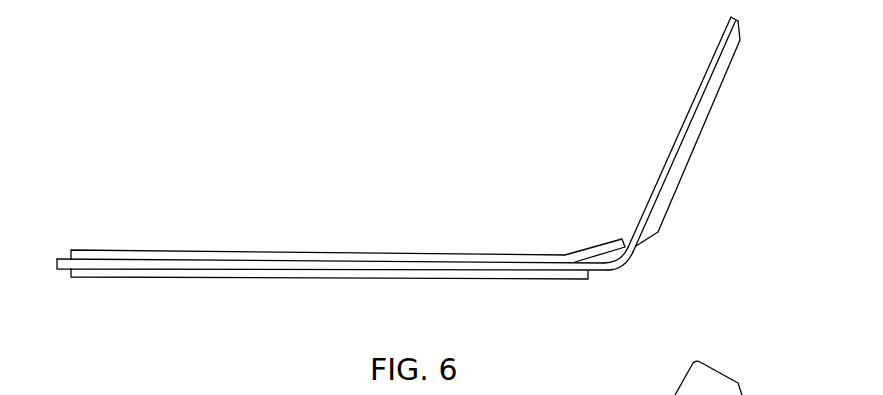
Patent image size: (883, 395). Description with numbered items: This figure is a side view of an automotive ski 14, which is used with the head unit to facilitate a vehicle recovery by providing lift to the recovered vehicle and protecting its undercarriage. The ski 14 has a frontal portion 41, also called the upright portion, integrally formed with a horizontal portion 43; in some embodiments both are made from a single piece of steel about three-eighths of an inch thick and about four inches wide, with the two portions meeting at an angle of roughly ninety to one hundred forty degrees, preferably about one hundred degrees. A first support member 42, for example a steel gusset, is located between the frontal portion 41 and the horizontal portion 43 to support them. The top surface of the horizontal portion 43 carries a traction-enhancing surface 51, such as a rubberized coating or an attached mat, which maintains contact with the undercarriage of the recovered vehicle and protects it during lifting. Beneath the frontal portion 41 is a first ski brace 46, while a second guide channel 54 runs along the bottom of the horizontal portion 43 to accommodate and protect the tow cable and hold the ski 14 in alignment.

The automotive ski 14 is at (330, 305).
The frontal portion 41 is at (752, 121).
The first support member 42 is at (606, 252).
The horizontal portion 43 is at (132, 262).
The first ski brace 46 is at (662, 205).
The traction-enhancing surface 51 is at (448, 255).
The second guide channel 54 is at (212, 275).